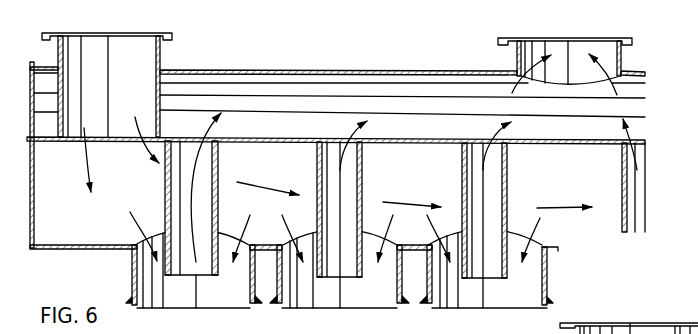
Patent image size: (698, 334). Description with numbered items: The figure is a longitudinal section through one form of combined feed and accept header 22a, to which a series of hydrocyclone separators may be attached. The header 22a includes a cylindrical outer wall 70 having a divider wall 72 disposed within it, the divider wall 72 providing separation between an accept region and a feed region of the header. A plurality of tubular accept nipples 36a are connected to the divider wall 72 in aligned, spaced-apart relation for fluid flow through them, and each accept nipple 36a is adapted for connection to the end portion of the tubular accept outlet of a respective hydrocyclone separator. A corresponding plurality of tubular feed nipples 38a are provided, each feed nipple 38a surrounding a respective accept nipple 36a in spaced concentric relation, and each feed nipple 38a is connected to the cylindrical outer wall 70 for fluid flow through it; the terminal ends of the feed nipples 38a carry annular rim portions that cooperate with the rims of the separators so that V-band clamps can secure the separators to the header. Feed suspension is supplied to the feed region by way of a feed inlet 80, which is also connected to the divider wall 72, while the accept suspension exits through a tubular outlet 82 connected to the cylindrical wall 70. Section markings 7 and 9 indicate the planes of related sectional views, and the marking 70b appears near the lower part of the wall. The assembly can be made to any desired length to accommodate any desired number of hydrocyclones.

The feed inlet 80 is at (161, 57).
The tubular outlet 82 is at (621, 57).
The cylindrical outer wall 70 is at (421, 71).
The feed and accept header 22a is at (244, 62).
The divider wall 72 is at (257, 142).
The tubular accept nipple 36a is at (362, 168).
The tubular feed nipple 38a is at (131, 279).
The section line 7- 7 is at (340, 63).
The section line 9- 9 is at (485, 333).
The lower plate 70b is at (430, 329).